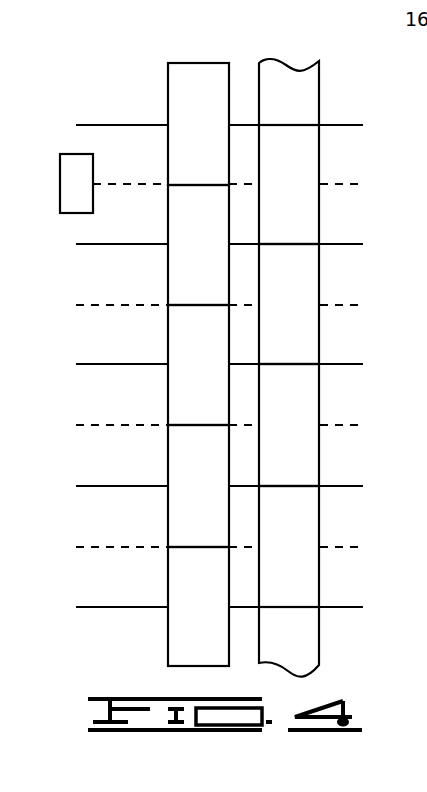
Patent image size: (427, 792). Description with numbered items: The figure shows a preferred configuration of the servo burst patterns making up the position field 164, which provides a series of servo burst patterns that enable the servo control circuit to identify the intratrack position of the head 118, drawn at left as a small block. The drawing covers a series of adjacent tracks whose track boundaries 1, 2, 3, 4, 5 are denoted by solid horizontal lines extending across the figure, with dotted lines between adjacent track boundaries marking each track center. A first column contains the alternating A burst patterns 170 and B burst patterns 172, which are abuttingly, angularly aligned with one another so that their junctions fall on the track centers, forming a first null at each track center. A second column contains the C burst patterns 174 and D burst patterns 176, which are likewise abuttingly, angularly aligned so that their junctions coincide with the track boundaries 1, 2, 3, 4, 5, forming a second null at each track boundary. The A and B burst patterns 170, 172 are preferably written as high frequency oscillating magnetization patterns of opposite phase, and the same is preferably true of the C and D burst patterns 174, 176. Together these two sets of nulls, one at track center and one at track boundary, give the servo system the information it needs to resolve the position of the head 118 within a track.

The position field 164 is at (138, 44).
The head 118 is at (84, 179).
The A burst pattern 170 is at (175, 100).
The B burst pattern 172 is at (176, 232).
The C burst pattern 174 is at (311, 161).
The D burst pattern 176 is at (311, 104).
The track boundary 1 is at (210, 125).
The track boundary 2 is at (210, 244).
The track boundary 3 is at (210, 364).
The track boundary 4 is at (210, 486).
The track boundary 5 is at (210, 607).